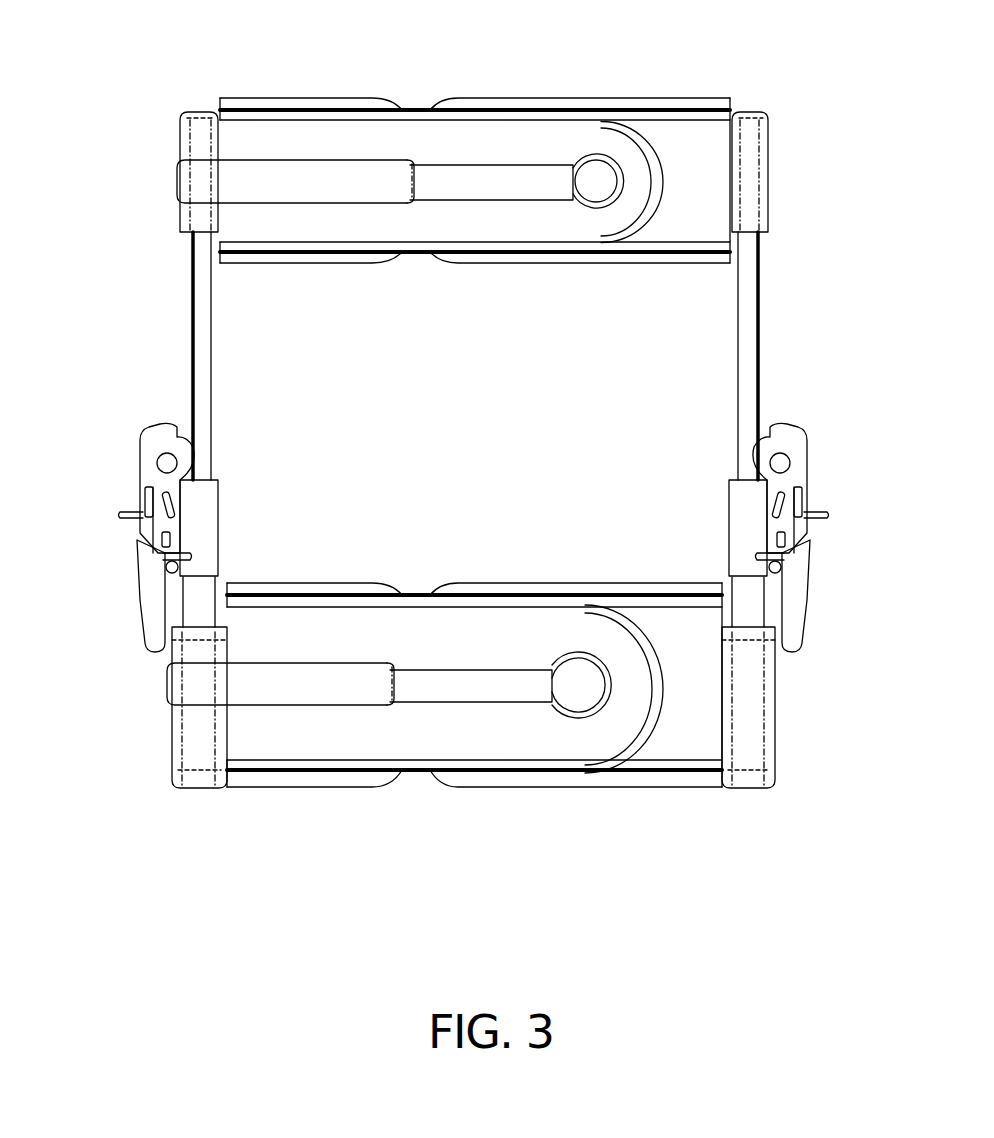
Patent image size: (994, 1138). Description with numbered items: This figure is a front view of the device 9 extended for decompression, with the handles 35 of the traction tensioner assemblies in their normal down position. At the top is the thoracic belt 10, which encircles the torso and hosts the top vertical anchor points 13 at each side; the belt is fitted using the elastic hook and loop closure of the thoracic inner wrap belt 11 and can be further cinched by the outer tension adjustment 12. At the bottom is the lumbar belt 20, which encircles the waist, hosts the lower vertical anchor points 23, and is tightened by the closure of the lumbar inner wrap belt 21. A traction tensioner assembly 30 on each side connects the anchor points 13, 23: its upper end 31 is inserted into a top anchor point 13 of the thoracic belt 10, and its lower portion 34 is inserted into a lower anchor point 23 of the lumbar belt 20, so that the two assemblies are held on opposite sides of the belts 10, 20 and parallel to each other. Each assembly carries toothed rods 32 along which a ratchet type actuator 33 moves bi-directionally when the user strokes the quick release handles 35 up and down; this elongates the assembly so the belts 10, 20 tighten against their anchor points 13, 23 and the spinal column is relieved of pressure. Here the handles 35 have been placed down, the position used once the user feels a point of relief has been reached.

The device 9 is at (170, 104).
The thoracic belt 10 is at (540, 90).
The thoracic inner wrap belt 11 is at (622, 148).
The outer tension adjustment 12 is at (479, 176).
The top vertical anchor points 13 is at (200, 112).
The lumbar belt 20 is at (544, 804).
The lumbar inner wrap belt 21 is at (618, 723).
The lower vertical anchor points 23 is at (203, 789).
The traction tensioner assembly 30 is at (136, 456).
The upper end 31 is at (180, 140).
The toothed rods 32 is at (763, 332).
The actuator 33 is at (140, 523).
The lower portion of traction tensioner assembly 34 is at (230, 714).
The handles 35 is at (133, 624).